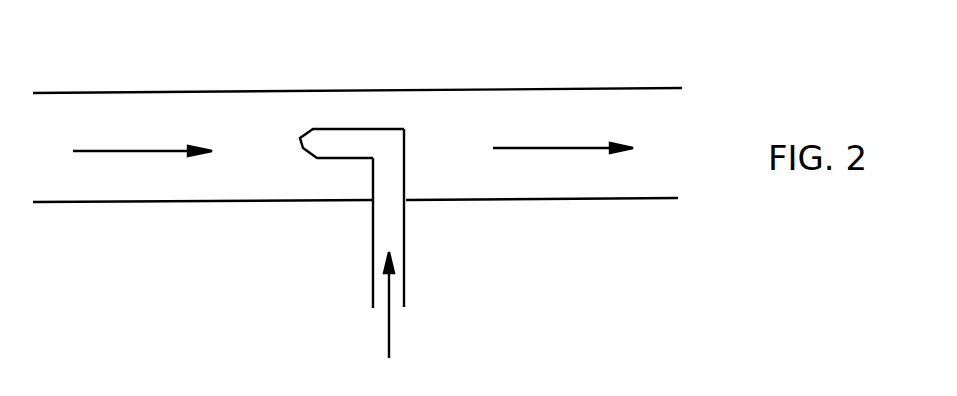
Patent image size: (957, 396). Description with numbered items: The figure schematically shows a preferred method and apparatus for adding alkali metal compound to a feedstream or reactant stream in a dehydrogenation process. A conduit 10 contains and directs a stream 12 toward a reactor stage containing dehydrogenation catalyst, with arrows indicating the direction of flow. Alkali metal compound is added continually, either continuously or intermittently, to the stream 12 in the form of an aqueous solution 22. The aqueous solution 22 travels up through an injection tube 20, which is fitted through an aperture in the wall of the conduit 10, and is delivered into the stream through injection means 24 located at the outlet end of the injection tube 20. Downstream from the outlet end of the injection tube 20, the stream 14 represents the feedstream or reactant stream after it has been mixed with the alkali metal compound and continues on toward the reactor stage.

The conduit 10 is at (242, 90).
The stream 12 is at (143, 150).
The stream 14 is at (565, 148).
The injection tube 20 is at (406, 254).
The aqueous solution 22 is at (389, 336).
The injection means 24 is at (305, 131).